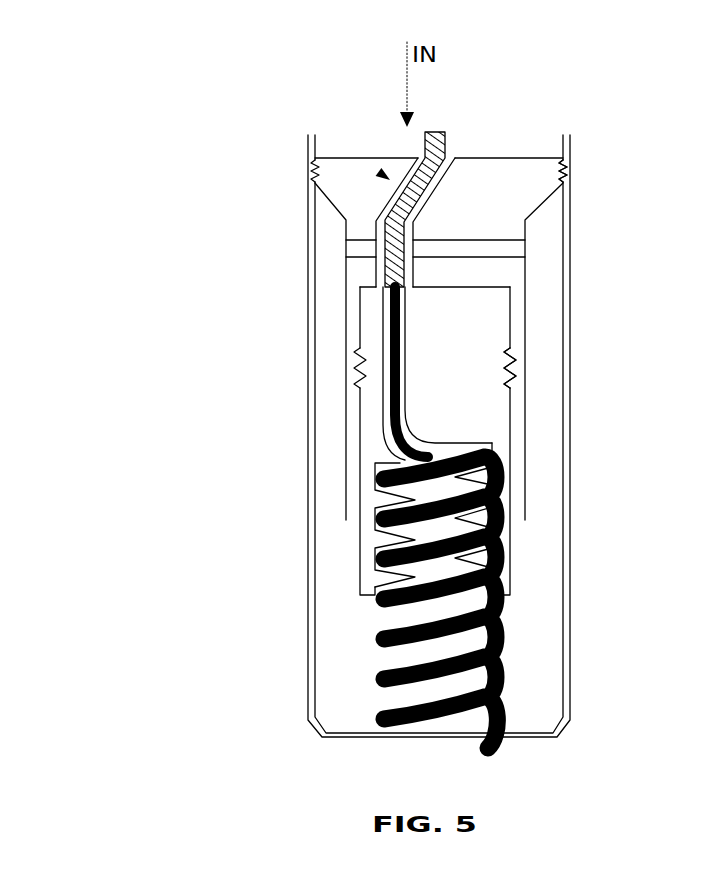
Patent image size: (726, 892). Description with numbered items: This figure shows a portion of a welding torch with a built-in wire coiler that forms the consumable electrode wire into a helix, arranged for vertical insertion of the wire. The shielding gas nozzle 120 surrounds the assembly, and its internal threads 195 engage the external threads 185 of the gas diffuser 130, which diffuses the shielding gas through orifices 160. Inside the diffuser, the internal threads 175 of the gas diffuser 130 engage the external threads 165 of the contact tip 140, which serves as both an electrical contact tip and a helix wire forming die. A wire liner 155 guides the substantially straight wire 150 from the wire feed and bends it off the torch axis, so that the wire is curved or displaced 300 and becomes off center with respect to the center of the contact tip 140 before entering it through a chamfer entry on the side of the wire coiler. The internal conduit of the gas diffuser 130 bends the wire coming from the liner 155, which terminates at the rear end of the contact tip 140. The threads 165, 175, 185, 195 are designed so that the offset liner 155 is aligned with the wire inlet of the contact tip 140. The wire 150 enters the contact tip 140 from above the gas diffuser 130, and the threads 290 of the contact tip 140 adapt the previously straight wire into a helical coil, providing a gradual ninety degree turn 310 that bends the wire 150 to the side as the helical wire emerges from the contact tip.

The shielding gas nozzle 120 is at (571, 662).
The gas diffuser 130 is at (346, 220).
The contact tip 140 is at (512, 548).
The consumable electrode 150 is at (390, 638).
The wire liner 155 is at (447, 147).
The orifices 160 is at (346, 250).
The external threads 165 is at (514, 370).
The internal threads 175 is at (510, 368).
The external threads 185 is at (571, 162).
The internal threads 195 is at (563, 171).
The threads 290 is at (455, 480).
The curved or displaced wire 300 is at (380, 176).
The gradual 90 degree turn 310 is at (400, 457).